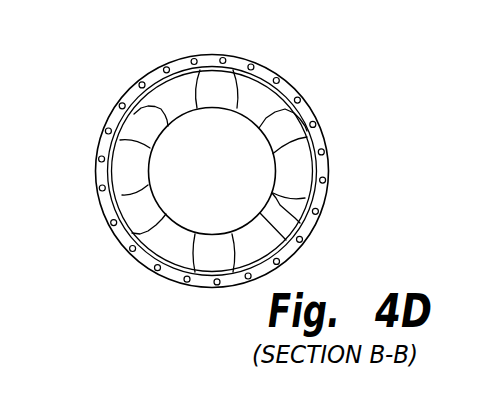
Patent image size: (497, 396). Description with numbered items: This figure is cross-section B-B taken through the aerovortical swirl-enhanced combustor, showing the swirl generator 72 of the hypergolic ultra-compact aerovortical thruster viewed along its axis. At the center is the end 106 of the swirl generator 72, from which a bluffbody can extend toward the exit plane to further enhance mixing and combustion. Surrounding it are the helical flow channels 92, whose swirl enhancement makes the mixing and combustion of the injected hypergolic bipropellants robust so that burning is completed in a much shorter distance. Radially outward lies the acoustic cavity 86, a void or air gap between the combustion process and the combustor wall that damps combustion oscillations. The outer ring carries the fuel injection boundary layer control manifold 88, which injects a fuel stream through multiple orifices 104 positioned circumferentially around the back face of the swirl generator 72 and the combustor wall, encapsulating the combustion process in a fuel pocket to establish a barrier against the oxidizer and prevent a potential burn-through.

The orifices 104 is at (193, 57).
The swirl generator 72 is at (210, 90).
The acoustic cavity 86 is at (289, 97).
The fuel injection boundary layer control manifold 88 is at (327, 141).
The helical flow channels 92 is at (300, 191).
The end of swirl generator 106 is at (175, 175).